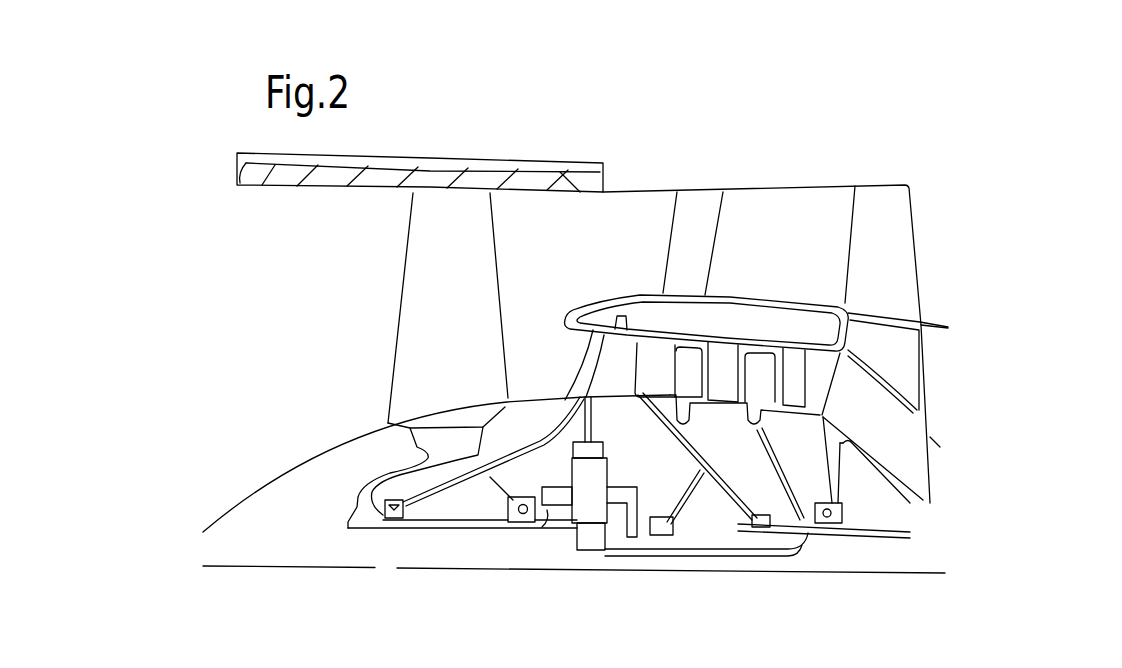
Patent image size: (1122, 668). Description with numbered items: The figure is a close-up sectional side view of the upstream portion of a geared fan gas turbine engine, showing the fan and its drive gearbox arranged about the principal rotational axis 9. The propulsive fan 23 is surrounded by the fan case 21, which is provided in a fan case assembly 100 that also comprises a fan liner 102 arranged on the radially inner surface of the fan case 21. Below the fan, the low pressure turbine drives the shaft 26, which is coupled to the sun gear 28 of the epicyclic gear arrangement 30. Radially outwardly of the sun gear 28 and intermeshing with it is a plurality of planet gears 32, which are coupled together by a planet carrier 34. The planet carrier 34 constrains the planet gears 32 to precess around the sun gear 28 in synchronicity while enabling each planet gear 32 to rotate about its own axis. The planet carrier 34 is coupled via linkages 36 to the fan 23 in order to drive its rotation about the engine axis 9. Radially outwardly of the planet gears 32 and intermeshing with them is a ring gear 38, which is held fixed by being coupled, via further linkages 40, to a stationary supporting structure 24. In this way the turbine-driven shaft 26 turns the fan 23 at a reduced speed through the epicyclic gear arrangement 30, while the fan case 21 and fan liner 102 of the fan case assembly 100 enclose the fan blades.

The fan case assembly 100 is at (493, 120).
The fan liner 102 is at (285, 162).
The fan case 21 is at (238, 154).
The propulsive fan 23 is at (418, 345).
The stationary supporting structure 24 is at (602, 364).
The principal rotational axis 9 is at (356, 568).
The shaft 26 is at (808, 533).
The sun gear 28 is at (583, 543).
The epicyclic gear arrangement 30 is at (570, 512).
The planet gears 32 is at (580, 513).
The planet carrier 34 is at (640, 540).
The linkages 36 is at (525, 522).
The ring gear 38 is at (575, 452).
The linkages 40 is at (593, 420).